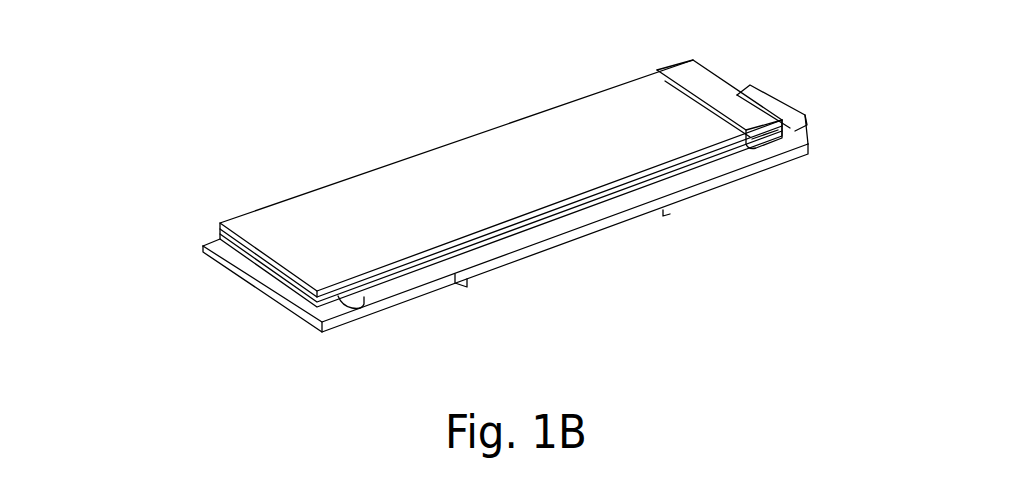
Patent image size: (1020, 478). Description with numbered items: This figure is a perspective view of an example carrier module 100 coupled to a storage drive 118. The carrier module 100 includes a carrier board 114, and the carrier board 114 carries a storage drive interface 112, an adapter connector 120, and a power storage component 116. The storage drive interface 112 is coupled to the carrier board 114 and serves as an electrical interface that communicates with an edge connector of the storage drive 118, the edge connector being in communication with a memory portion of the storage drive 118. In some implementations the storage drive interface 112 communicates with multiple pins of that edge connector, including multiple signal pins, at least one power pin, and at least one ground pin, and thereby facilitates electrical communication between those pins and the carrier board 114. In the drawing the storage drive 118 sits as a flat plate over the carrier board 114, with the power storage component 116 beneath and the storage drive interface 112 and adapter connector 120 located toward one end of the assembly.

The carrier module 100 is at (200, 107).
The storage drive interface 112 is at (760, 118).
The carrier board 114 is at (707, 180).
The power storage component 116 is at (530, 258).
The storage drive 118 is at (563, 128).
The adapter connector 120 is at (773, 97).